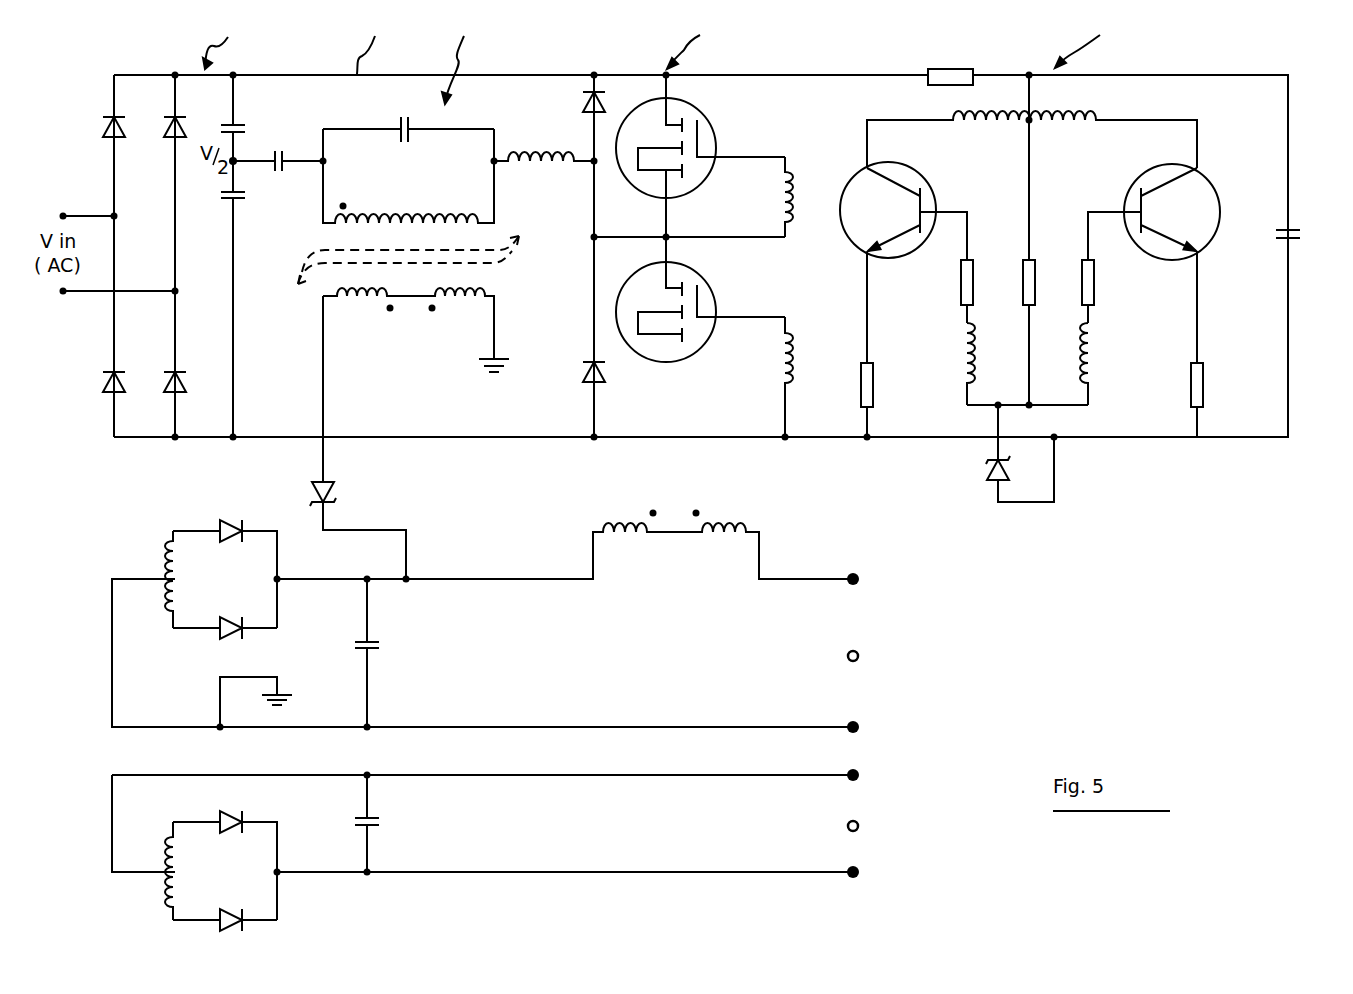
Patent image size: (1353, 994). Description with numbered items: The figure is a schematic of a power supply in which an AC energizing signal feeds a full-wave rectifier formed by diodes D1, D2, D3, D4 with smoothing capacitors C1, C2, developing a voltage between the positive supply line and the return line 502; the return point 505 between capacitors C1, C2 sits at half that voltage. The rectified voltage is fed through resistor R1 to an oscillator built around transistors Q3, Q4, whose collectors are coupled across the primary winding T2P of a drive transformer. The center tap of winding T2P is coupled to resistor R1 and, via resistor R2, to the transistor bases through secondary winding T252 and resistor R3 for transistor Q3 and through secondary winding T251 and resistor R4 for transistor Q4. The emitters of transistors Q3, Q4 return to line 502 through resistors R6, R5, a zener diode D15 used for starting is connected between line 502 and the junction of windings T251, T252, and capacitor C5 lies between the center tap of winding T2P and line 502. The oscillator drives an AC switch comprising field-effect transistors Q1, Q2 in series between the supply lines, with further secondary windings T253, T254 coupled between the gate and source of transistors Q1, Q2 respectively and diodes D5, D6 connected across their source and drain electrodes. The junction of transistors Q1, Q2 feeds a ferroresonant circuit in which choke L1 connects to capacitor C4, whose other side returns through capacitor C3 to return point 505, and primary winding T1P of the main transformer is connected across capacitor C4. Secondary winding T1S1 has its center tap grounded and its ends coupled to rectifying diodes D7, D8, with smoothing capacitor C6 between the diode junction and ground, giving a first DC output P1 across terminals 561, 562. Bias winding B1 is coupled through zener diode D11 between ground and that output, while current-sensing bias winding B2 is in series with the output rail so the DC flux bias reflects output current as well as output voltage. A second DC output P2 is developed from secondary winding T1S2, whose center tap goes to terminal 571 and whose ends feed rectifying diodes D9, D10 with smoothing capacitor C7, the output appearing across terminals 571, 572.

The line 502 is at (268, 430).
The return point 505 is at (237, 157).
The terminal 561 is at (858, 574).
The terminal 562 is at (859, 723).
The terminal 571 is at (859, 771).
The terminal 572 is at (859, 876).
The diode D1 is at (104, 256).
The diode D2 is at (165, 256).
The diode D3 is at (104, 368).
The diode D4 is at (165, 368).
The diode D5 is at (580, 256).
The diode D6 is at (581, 359).
The rectifying diode D7 is at (225, 564).
The rectifying diode D8 is at (225, 617).
The rectifying diode D9 is at (225, 855).
The rectifying diode D10 is at (225, 908).
The zener diode D11 is at (358, 437).
The zener diode D15 is at (999, 453).
The smoothing capacitor C1 is at (224, 118).
The smoothing capacitor C2 is at (246, 299).
The capacitor C3 is at (278, 151).
The capacitor C4 is at (408, 117).
The capacitor C5 is at (1304, 235).
The smoothing capacitor C6 is at (381, 653).
The smoothing capacitor C7 is at (381, 823).
The resistor R1 is at (950, 65).
The resistor R2 is at (1043, 240).
The resistor R3 is at (981, 291).
The resistor R4 is at (1102, 291).
The resistor R5 is at (1211, 400).
The resistor R6 is at (881, 400).
The field-effect transistor Q1 is at (700, 156).
The field-effect transistor Q2 is at (700, 299).
The transistor Q3 is at (903, 262).
The transistor Q4 is at (1166, 263).
The choke L1 is at (544, 145).
The primary winding T1P is at (408, 176).
The bias winding B1 is at (416, 330).
The current-sensing bias winding B2 is at (672, 501).
The secondary winding T1S1 is at (474, 629).
The secondary winding T1S2 is at (135, 847).
The primary winding T2P is at (1032, 127).
The secondary winding T251 is at (1092, 345).
The secondary winding T252 is at (964, 342).
The secondary winding T253 is at (793, 176).
The secondary winding T254 is at (783, 360).
The first DC output P1 is at (870, 656).
The second DC output P2 is at (870, 826).